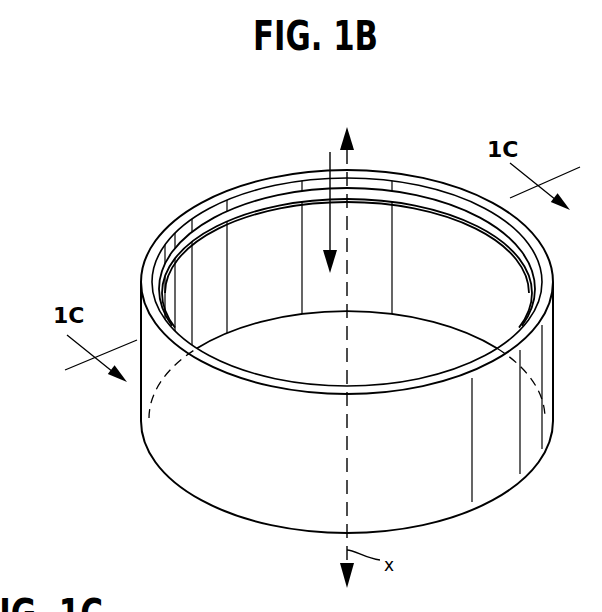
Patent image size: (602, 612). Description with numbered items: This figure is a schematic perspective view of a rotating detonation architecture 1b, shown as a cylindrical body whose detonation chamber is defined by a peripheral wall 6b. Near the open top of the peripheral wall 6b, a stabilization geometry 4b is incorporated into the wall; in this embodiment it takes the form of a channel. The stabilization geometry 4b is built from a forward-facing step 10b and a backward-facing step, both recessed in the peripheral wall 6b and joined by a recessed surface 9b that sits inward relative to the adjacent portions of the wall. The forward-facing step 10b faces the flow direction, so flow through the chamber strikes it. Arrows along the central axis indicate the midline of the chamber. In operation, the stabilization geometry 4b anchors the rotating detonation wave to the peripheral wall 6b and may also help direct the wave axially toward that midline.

The rotating detonation architecture 1b is at (176, 161).
The stabilization geometry 4b is at (428, 184).
The recessed surface 9b is at (463, 216).
The forward-facing step 10b is at (383, 203).
The peripheral wall 6b is at (242, 298).